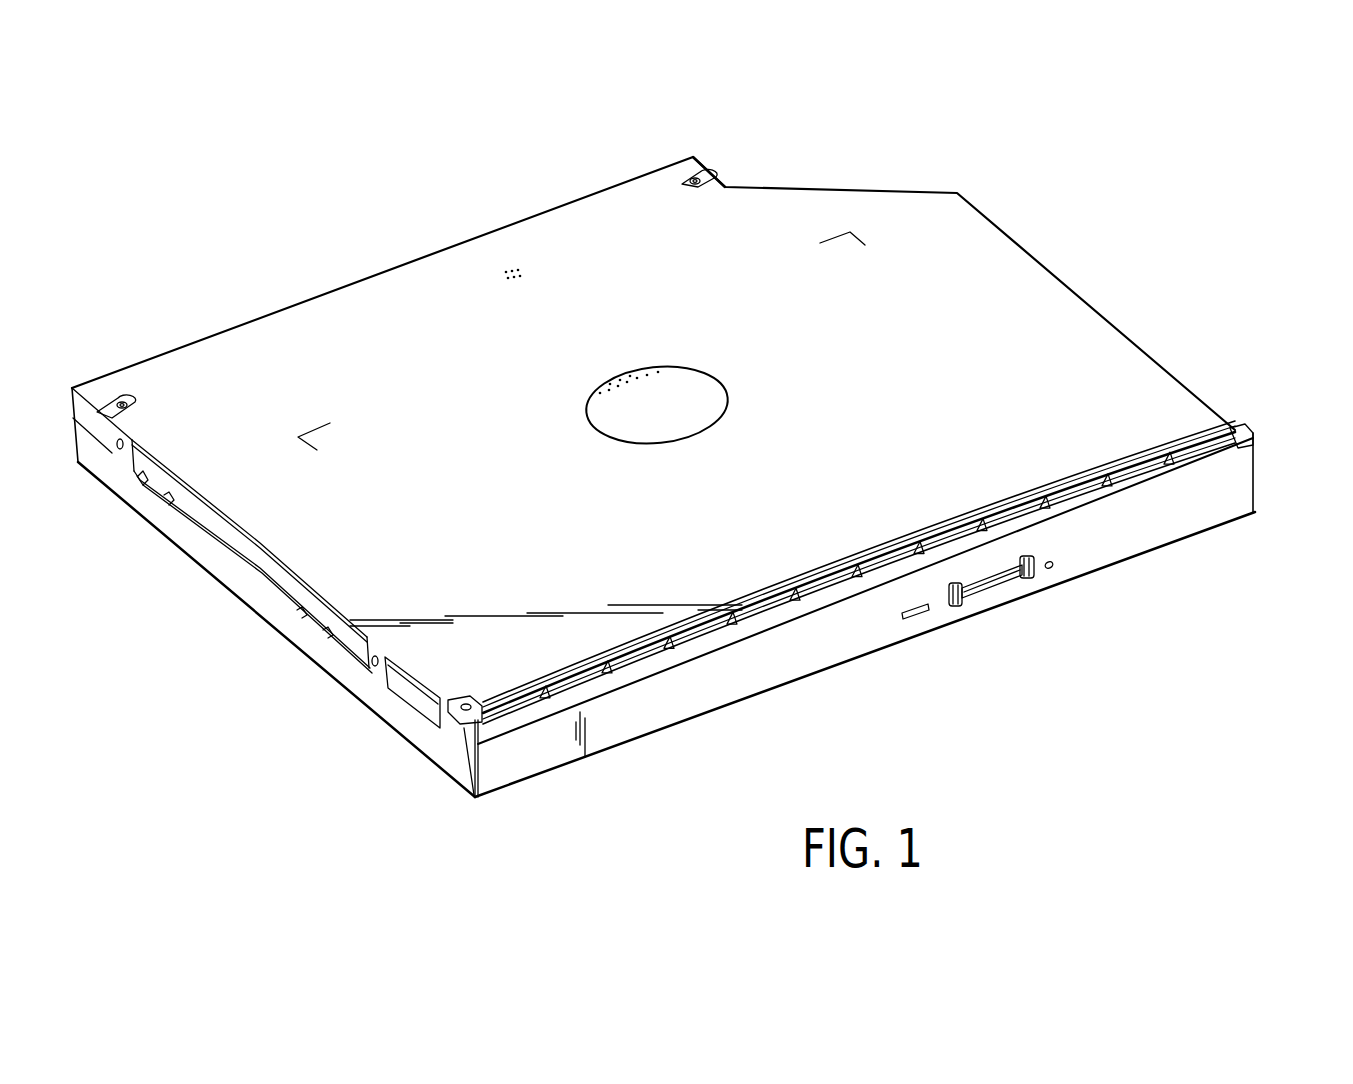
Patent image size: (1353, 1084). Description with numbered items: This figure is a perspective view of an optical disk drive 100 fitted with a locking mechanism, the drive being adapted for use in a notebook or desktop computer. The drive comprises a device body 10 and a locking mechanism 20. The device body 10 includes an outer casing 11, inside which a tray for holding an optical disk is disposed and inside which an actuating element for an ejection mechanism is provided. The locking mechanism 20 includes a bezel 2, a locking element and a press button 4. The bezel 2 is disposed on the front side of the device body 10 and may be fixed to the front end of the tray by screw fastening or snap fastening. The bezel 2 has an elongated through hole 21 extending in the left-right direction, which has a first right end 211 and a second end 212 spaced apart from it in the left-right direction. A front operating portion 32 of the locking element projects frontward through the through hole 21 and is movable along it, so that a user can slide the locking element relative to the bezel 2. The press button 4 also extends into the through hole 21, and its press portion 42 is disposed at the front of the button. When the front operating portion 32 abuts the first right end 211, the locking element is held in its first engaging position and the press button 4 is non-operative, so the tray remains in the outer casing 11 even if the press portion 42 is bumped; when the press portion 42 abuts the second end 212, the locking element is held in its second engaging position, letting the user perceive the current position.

The optical disk drive 100 is at (375, 222).
The device body 10 is at (1122, 268).
The outer casing 11 is at (1016, 277).
The locking mechanism 20 is at (1270, 488).
The bezel 2 is at (1164, 558).
The through hole 21 is at (958, 600).
The first right end 211 is at (1030, 558).
The second end 212 is at (952, 595).
The front operating portion 32 is at (1042, 574).
The press button 4 is at (1020, 596).
The press portion 42 is at (985, 588).